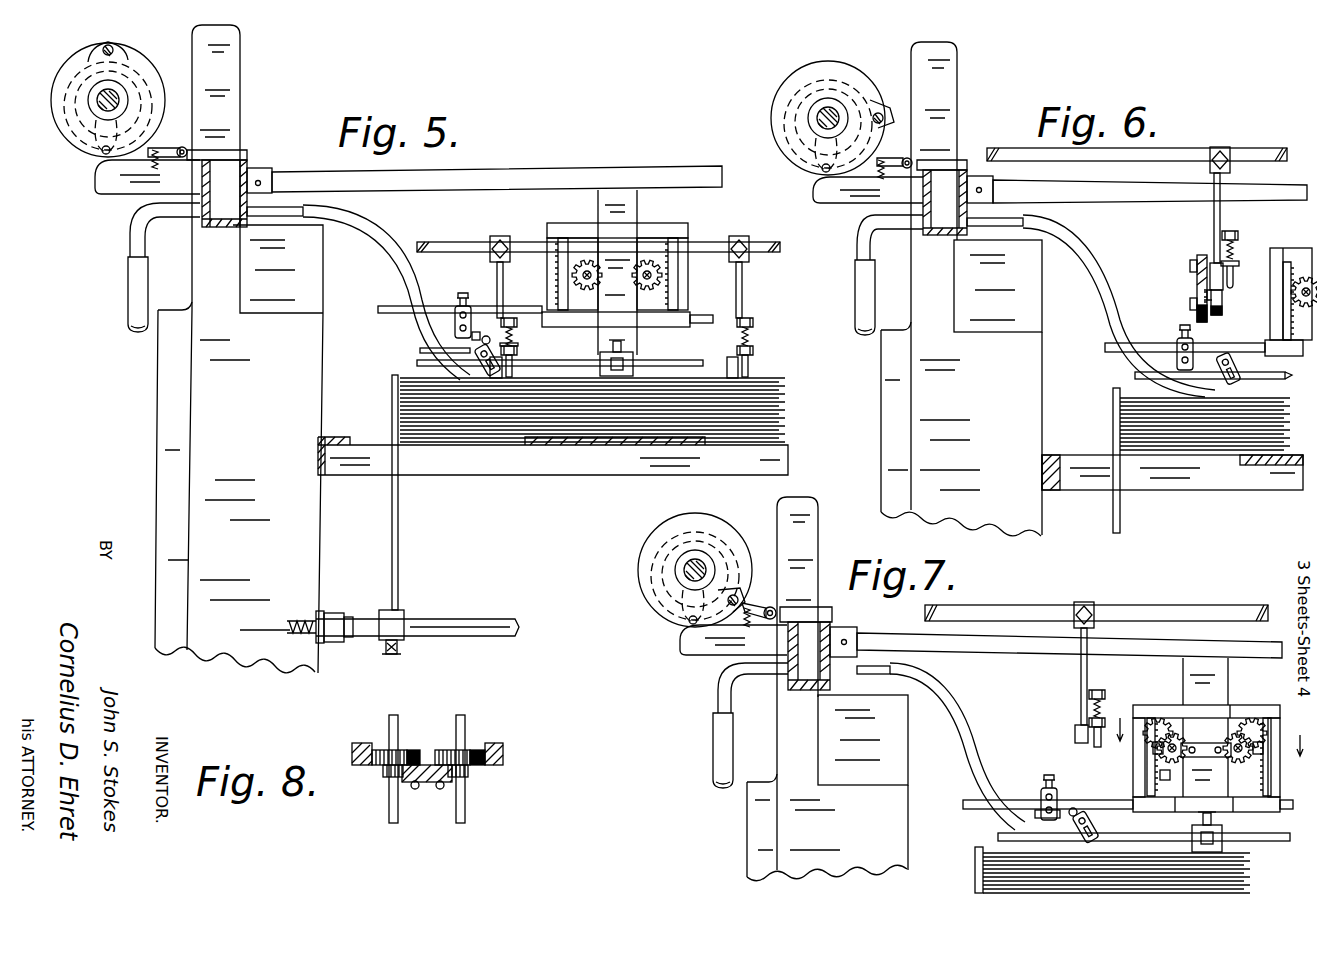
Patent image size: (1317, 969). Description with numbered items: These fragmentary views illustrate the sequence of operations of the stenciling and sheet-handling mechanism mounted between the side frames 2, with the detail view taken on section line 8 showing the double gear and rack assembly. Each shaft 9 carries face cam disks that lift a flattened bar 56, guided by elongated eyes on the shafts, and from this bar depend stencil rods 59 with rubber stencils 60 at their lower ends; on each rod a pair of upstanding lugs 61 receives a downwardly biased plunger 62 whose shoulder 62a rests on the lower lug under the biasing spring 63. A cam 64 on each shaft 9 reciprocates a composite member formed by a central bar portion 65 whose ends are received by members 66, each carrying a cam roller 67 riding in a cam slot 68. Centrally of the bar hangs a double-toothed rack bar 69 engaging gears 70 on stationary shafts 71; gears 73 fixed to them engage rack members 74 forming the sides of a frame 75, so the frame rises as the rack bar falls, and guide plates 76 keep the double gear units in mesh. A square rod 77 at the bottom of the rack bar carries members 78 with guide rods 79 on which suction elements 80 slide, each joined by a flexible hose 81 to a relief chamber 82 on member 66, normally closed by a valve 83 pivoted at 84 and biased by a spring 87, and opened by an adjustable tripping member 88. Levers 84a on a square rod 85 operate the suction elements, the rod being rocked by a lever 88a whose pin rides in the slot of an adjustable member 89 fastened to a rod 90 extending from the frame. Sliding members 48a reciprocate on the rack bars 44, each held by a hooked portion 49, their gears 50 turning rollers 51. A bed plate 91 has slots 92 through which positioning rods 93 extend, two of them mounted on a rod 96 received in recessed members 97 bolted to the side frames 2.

In FIG. 5, the side frames 2 is at (158, 404).
In FIG. 6, the side frames 2 is at (876, 384).
In FIG. 7, the side frames 2 is at (748, 822).
In FIG. 7, the section line 8— 8 is at (1208, 747).
In FIG. 5, the shaft 9 is at (113, 92).
In FIG. 6, the shaft 9 is at (832, 110).
In FIG. 7, the shaft 9 is at (700, 562).
In FIG. 6, the rack bar 44 is at (1195, 262).
In FIG. 6, the sliding member 48a is at (1193, 258).
In FIG. 6, the hooked portion 49 is at (1204, 258).
In FIG. 6, the gear 50 is at (1197, 312).
In FIG. 6, the roller 51 is at (1224, 312).
In FIG. 5, the flattened bar 56 is at (757, 255).
In FIG. 6, the flattened bar 56 is at (1254, 152).
In FIG. 7, the flattened bar 56 is at (1170, 610).
In FIG. 5, the stencil rod 59 is at (497, 262).
In FIG. 6, the stencil rod 59 is at (1222, 190).
In FIG. 7, the stencil rod 59 is at (1080, 682).
In FIG. 5, the stencil 60 is at (740, 370).
In FIG. 6, the stencil 60 is at (1224, 288).
In FIG. 7, the stencil 60 is at (1075, 732).
In FIG. 5, the upstanding lugs 61 is at (510, 318).
In FIG. 6, the upstanding lugs 61 is at (1233, 231).
In FIG. 7, the upstanding lugs 61 is at (1104, 692).
In FIG. 5, the plunger 62 is at (513, 370).
In FIG. 6, the plunger 62 is at (1236, 280).
In FIG. 7, the plunger 62 is at (1093, 746).
In FIG. 5, the shoulder 62a is at (518, 345).
In FIG. 6, the shoulder 62a is at (1240, 262).
In FIG. 5, the biasing spring 63 is at (509, 327).
In FIG. 6, the biasing spring 63 is at (1238, 246).
In FIG. 7, the biasing spring 63 is at (1102, 708).
In FIG. 5, the cam 64 is at (100, 111).
In FIG. 6, the cam 64 is at (807, 111).
In FIG. 7, the cam 64 is at (675, 570).
In FIG. 5, the central bar portion 65 is at (622, 186).
In FIG. 6, the central bar portion 65 is at (1282, 197).
In FIG. 7, the central bar portion 65 is at (1260, 650).
In FIG. 5, the member 66 is at (98, 186).
In FIG. 6, the member 66 is at (822, 200).
In FIG. 7, the member 66 is at (684, 652).
In FIG. 5, the cam roller 67 is at (100, 152).
In FIG. 6, the cam roller 67 is at (822, 160).
In FIG. 7, the cam roller 67 is at (688, 614).
In FIG. 5, the cam slot 68 is at (138, 82).
In FIG. 6, the cam slot 68 is at (778, 108).
In FIG. 7, the cam slot 68 is at (646, 558).
In FIG. 5, the rack bar 69 is at (598, 215).
In FIG. 7, the rack bar 69 is at (1232, 712).
In FIG. 8, the rack bar 69 is at (426, 790).
In FIG. 5, the gear 70 is at (583, 272).
In FIG. 7, the gear 70 is at (1172, 766).
In FIG. 8, the gear 70 is at (383, 773).
In FIG. 5, the stationary shaft 71 is at (660, 282).
In FIG. 7, the stationary shaft 71 is at (1270, 762).
In FIG. 8, the stationary shaft 71 is at (397, 720).
In FIG. 5, the gear 73 is at (577, 258).
In FIG. 6, the gear 73 is at (1303, 309).
In FIG. 7, the gear 73 is at (1262, 752).
In FIG. 8, the gear 73 is at (440, 752).
In FIG. 5, the rack members 74 is at (547, 276).
In FIG. 6, the rack members 74 is at (1270, 308).
In FIG. 7, the rack members 74 is at (1158, 812).
In FIG. 5, the frame 75 is at (660, 227).
In FIG. 7, the frame 75 is at (1264, 714).
In FIG. 7, the guide plates 76 is at (1200, 738).
In FIG. 8, the guide plates 76 is at (362, 743).
In FIG. 5, the square rod 77 is at (630, 356).
In FIG. 7, the square rod 77 is at (1206, 852).
In FIG. 5, the member 78 is at (634, 366).
In FIG. 7, the member 78 is at (1216, 850).
In FIG. 5, the guide rods 79 is at (540, 360).
In FIG. 7, the guide rods 79 is at (1000, 835).
In FIG. 5, the suction element 80 is at (398, 380).
In FIG. 6, the suction element 80 is at (1240, 394).
In FIG. 7, the suction element 80 is at (1000, 846).
In FIG. 5, the flexible hose 81 is at (398, 252).
In FIG. 6, the flexible hose 81 is at (1088, 284).
In FIG. 7, the flexible hose 81 is at (975, 744).
In FIG. 5, the relief chamber 82 is at (250, 168).
In FIG. 6, the relief chamber 82 is at (978, 176).
In FIG. 7, the relief chamber 82 is at (835, 686).
In FIG. 5, the valve 83 is at (222, 150).
In FIG. 6, the valve 83 is at (948, 162).
In FIG. 7, the valve 83 is at (833, 612).
In FIG. 5, the pivot 84 is at (182, 147).
In FIG. 6, the pivot 84 is at (906, 158).
In FIG. 7, the pivot 84 is at (759, 611).
In FIG. 5, the lever 84a is at (468, 356).
In FIG. 6, the lever 84a is at (1236, 366).
In FIG. 7, the lever 84a is at (1095, 826).
In FIG. 5, the square rod 85 is at (484, 336).
In FIG. 7, the square rod 85 is at (1089, 815).
In FIG. 5, the spring 87 is at (150, 165).
In FIG. 6, the spring 87 is at (880, 175).
In FIG. 7, the spring 87 is at (742, 625).
In FIG. 5, the tripping member 88 is at (100, 42).
In FIG. 6, the tripping member 88 is at (888, 106).
In FIG. 7, the tripping member 88 is at (736, 610).
In FIG. 5, the lever 88a is at (445, 340).
In FIG. 6, the lever 88a is at (1198, 352).
In FIG. 7, the lever 88a is at (1058, 808).
In FIG. 5, the adjustable member 89 is at (455, 310).
In FIG. 7, the adjustable member 89 is at (1043, 792).
In FIG. 5, the rod 90 is at (490, 306).
In FIG. 7, the rod 90 is at (1094, 800).
In FIG. 6, the bed plate 91 is at (1084, 492).
In FIG. 5, the slots 92 is at (512, 466).
In FIG. 6, the slots 92 is at (1196, 462).
In FIG. 5, the positioning rods 93 is at (392, 502).
In FIG. 6, the positioning rods 93 is at (1120, 530).
In FIG. 7, the positioning rods 93 is at (975, 868).
In FIG. 5, the rod 96 is at (430, 619).
In FIG. 5, the recessed members 97 is at (340, 612).